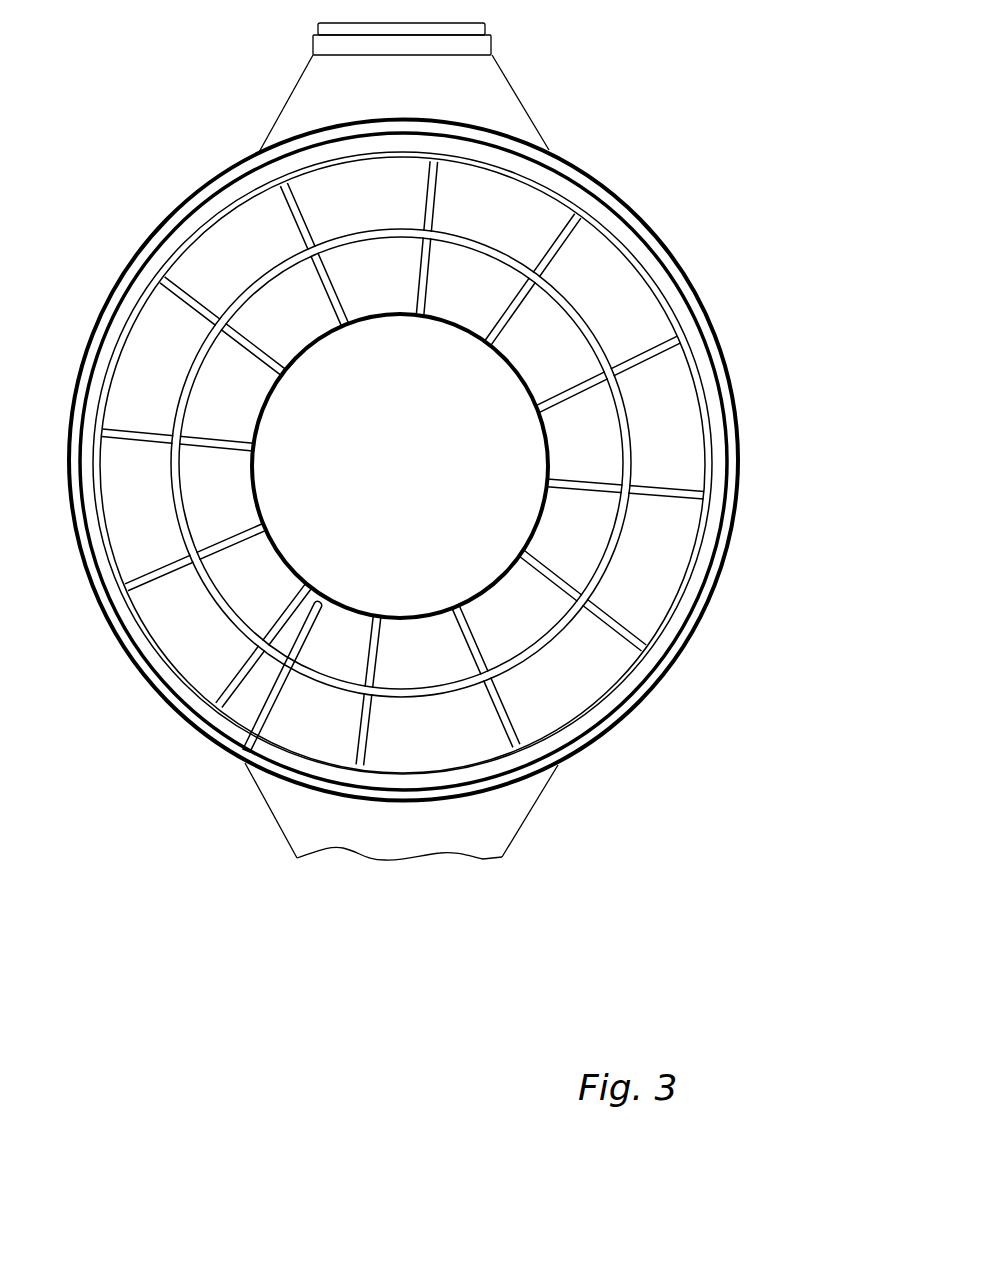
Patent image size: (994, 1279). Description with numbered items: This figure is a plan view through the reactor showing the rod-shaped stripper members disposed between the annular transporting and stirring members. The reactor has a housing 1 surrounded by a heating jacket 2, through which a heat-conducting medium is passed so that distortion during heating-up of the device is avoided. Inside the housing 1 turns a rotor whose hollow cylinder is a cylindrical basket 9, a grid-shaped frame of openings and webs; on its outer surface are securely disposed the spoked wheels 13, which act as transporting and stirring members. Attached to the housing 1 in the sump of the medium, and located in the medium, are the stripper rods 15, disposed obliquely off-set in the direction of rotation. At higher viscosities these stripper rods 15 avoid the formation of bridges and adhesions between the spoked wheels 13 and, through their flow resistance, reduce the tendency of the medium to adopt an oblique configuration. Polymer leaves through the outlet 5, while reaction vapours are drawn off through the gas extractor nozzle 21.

The housing 1 is at (722, 498).
The heating jacket 2 is at (723, 552).
The outlet 5 is at (300, 818).
The cylindrical basket 9 is at (515, 370).
The spoked wheel 13 is at (623, 417).
The stripper rod 15 is at (258, 717).
The gas extractor nozzle 21 is at (499, 93).